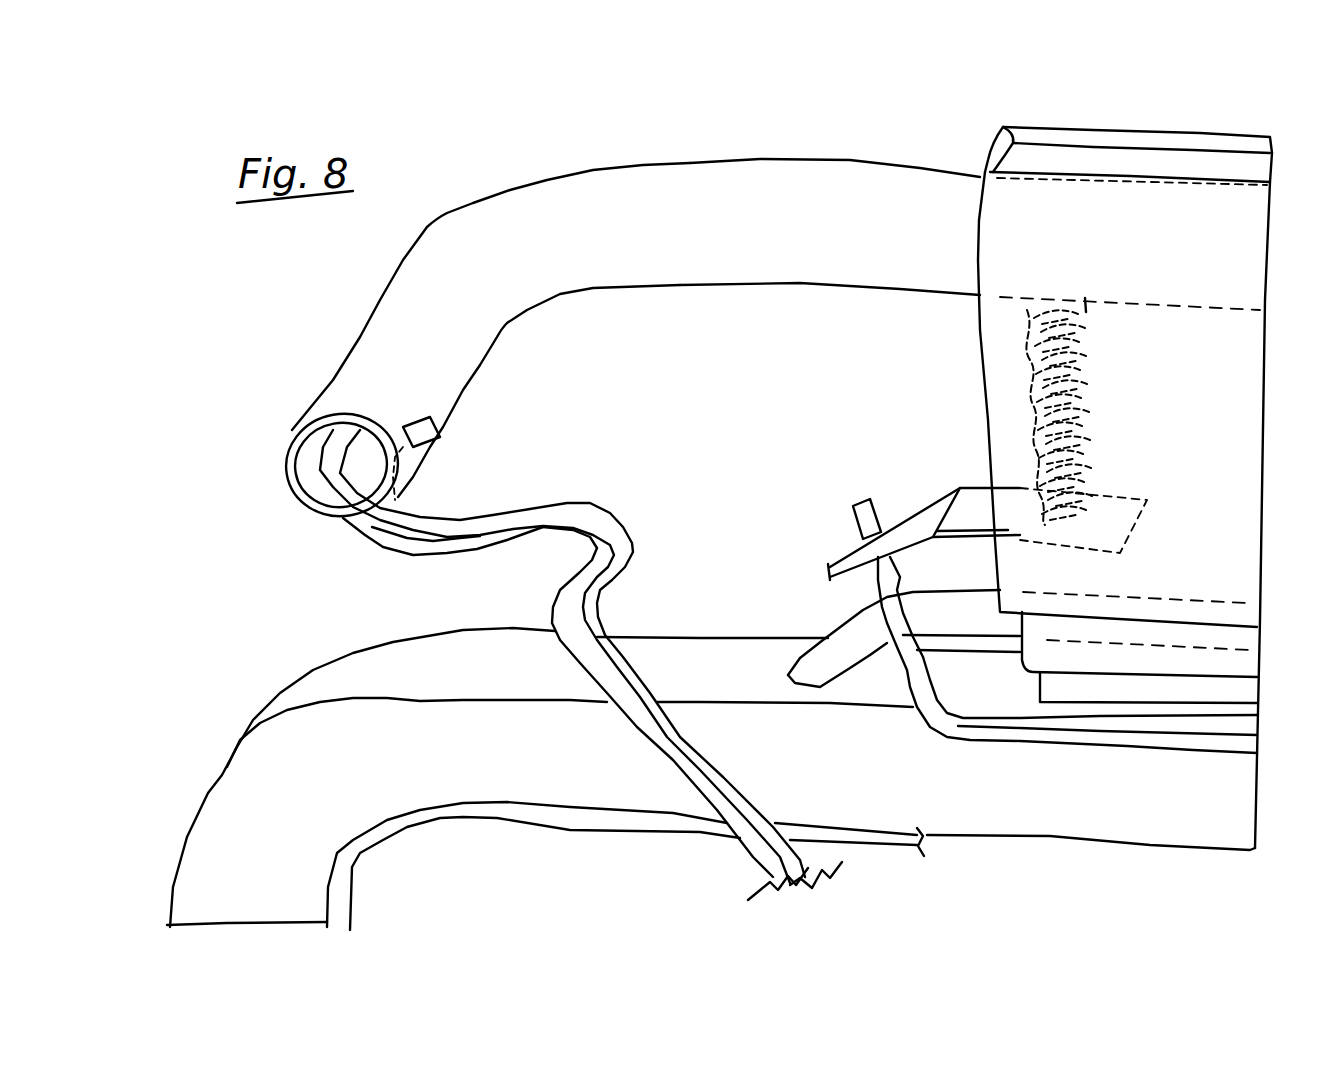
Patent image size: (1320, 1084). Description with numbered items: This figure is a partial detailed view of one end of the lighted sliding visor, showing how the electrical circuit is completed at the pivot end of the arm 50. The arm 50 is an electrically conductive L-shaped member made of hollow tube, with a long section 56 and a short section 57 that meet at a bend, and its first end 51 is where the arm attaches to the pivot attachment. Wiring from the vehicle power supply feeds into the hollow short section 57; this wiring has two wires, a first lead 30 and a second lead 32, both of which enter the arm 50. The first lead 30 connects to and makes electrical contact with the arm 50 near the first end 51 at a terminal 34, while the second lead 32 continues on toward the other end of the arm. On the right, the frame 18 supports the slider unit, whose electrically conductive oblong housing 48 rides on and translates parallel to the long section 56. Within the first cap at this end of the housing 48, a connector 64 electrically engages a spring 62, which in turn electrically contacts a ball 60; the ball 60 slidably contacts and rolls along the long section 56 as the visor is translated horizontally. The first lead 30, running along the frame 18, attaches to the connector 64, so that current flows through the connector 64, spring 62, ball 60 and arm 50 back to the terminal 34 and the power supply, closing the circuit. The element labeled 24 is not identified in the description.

The frame 18 is at (220, 777).
The blade 24 is at (830, 630).
The first lead 30 is at (620, 517).
The second lead 32 is at (390, 530).
The terminal 34 is at (443, 427).
The housing 48 is at (1145, 130).
The arm 50 is at (543, 172).
The first end 51 is at (283, 493).
The long section 56 is at (823, 163).
The short section 57 is at (347, 353).
The ball 60 is at (1017, 317).
The spring 62 is at (1013, 388).
The connector 64 is at (913, 500).